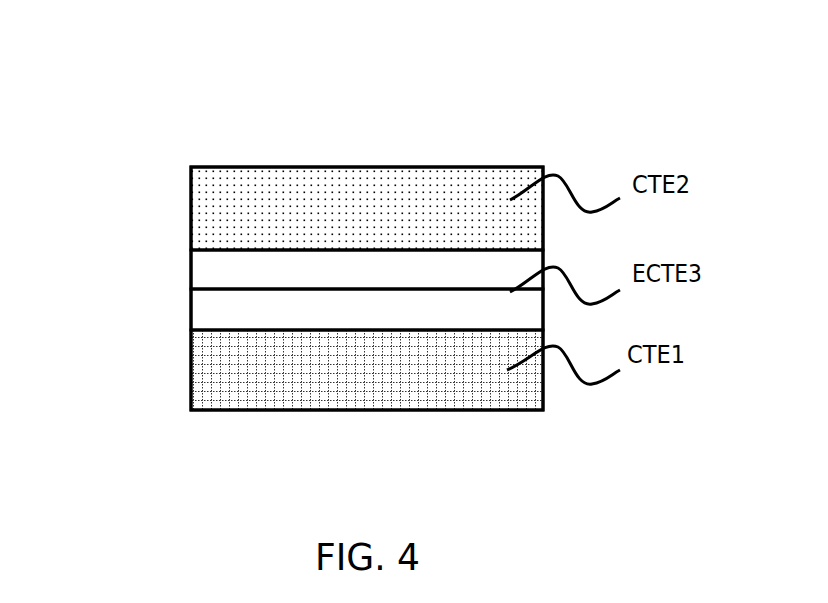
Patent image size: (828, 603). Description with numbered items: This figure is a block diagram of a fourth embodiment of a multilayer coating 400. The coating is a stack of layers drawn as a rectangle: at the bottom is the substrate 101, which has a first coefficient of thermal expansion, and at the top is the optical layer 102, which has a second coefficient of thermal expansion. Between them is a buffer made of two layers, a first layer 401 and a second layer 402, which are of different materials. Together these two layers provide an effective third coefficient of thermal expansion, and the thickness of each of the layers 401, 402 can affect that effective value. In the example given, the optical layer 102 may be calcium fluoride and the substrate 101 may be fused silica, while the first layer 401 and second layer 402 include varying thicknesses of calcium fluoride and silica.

The multilayer coating 400 is at (487, 100).
The first layer 401 is at (207, 260).
The second layer 402 is at (207, 310).
The substrate 101 is at (387, 383).
The optical layer 102 is at (389, 223).